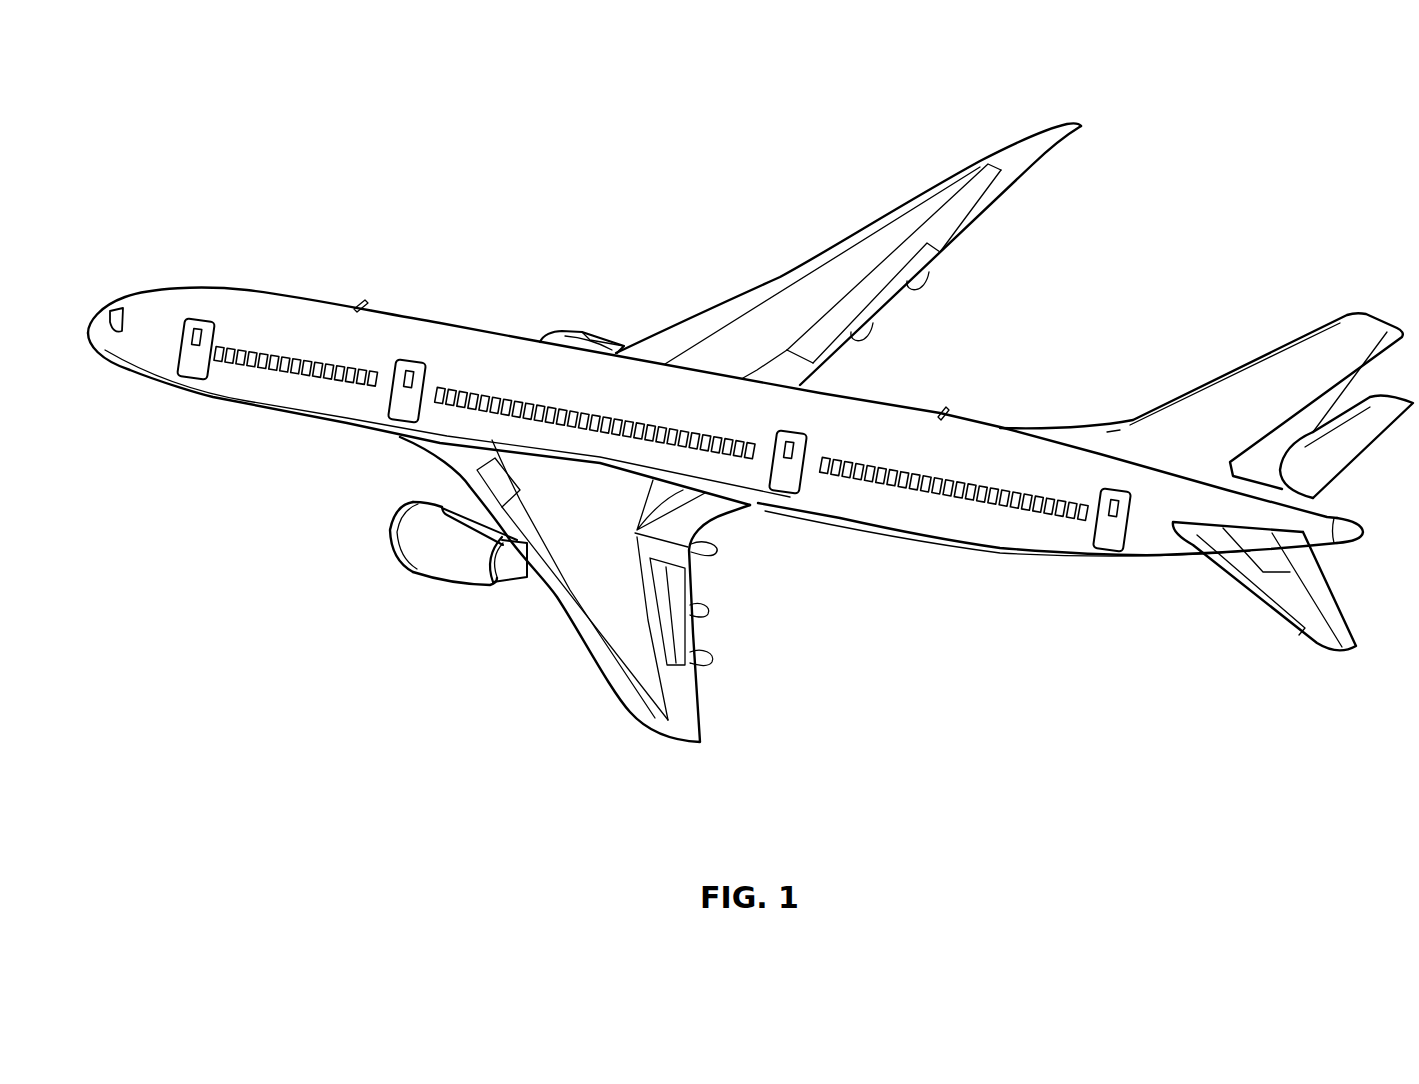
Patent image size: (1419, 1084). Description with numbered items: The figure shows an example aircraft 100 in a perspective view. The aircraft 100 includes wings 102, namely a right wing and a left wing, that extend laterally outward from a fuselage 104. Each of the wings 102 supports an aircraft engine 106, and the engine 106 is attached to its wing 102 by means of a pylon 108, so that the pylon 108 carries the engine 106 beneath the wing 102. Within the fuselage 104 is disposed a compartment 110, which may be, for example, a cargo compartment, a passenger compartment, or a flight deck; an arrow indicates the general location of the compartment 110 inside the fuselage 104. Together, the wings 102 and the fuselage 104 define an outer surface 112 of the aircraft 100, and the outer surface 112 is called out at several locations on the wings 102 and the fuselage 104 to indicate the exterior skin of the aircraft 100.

The aircraft 100 is at (1281, 99).
The wings 102 is at (860, 230).
The fuselage 104 is at (753, 493).
The aircraft engine 106 is at (563, 333).
The pylon 108 is at (613, 337).
The compartment 110 is at (918, 339).
The outer surface 112 is at (737, 340).